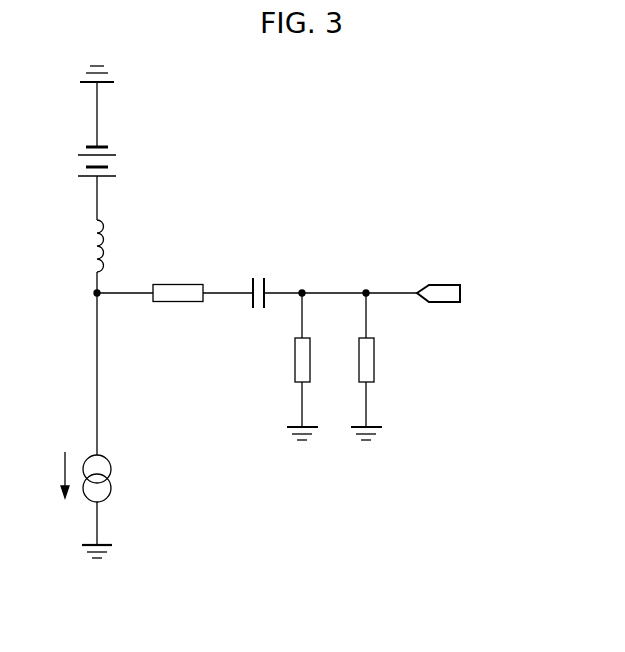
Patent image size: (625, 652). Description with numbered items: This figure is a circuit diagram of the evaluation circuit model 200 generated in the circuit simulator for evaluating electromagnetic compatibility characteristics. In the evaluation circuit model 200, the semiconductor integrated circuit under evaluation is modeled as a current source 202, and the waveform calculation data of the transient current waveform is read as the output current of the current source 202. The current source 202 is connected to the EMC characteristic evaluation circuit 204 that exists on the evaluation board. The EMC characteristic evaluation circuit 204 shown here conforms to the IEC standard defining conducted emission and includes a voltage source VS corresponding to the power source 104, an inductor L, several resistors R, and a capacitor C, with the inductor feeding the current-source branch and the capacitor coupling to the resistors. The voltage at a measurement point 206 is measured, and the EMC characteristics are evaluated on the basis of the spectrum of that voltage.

The evaluation circuit model 200 is at (258, 622).
The power source 104 is at (125, 158).
The current source 202 is at (111, 489).
The EMC characteristic evaluation circuit 204 is at (527, 220).
The measurement point 206 is at (446, 284).